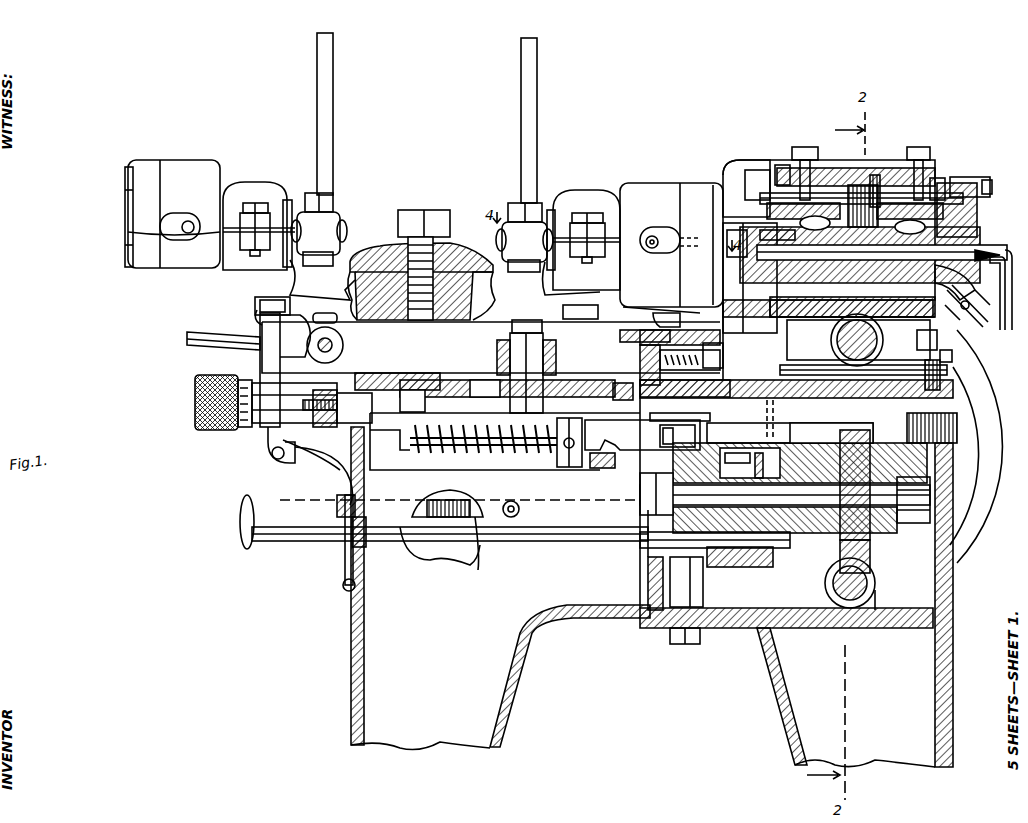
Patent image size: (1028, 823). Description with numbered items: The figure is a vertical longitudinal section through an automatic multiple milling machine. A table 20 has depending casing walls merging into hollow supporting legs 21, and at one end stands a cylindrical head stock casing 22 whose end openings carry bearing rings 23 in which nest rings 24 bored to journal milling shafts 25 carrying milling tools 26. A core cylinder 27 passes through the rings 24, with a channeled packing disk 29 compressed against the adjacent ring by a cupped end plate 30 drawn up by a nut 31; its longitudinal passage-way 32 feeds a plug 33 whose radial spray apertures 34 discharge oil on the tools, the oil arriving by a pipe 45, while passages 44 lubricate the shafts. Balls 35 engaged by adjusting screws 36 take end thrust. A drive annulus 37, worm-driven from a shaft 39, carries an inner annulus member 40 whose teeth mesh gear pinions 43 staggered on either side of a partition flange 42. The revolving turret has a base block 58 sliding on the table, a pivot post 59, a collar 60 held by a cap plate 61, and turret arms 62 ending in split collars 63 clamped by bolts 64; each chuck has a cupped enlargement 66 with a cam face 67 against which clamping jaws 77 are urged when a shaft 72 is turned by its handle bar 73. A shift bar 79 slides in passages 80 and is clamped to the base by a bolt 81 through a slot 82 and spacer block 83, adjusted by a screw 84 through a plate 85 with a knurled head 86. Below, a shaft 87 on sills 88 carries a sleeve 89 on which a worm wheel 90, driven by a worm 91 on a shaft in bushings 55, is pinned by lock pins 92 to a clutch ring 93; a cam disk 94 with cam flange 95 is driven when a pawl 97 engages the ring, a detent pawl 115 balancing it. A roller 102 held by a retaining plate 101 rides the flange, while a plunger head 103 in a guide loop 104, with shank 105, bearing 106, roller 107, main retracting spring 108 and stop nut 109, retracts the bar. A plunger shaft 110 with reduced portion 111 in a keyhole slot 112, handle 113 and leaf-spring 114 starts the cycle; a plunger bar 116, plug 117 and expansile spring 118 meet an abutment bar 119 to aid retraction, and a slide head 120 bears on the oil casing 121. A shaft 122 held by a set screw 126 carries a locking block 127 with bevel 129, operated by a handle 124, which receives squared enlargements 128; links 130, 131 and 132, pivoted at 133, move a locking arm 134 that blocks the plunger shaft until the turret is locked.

The table or base plate 20 is at (915, 385).
The hollow supporting legs 21 is at (510, 715).
The head stock casing 22 is at (890, 160).
The bearing rings 23 is at (780, 165).
The rings 24 is at (758, 172).
The milling shaft 25 is at (820, 200).
The milling tools 26 is at (750, 195).
The core cylinder 27 is at (968, 285).
The annular packing disk 29 is at (770, 232).
The cupped end plate 30 is at (970, 178).
The nut 31 is at (1010, 250).
The longitudinal passage-way 32 is at (1006, 280).
The plug 33 is at (700, 242).
The radial spray apertures 34 is at (700, 250).
The balls 35 is at (962, 333).
The adjusting screws 36 is at (990, 190).
The drive annulus 37 is at (878, 175).
The shaft 39 is at (860, 360).
The annulus member 40 is at (880, 185).
The annular partition flange 42 is at (935, 366).
The gear pinions 43 is at (948, 87).
The passages 44 is at (805, 147).
The pipe 45 is at (982, 307).
The bushings 55 is at (975, 520).
The base block 58 is at (491, 347).
The pivot post 59 is at (392, 258).
The collar 60 is at (468, 250).
The cap plate 61 is at (430, 250).
The turret arms 62 is at (445, 280).
The split chuck receiving collars 63 is at (250, 192).
The bolts 64 is at (262, 205).
The cupped enlargement 66 is at (148, 168).
The frusto-conical cam face 67 is at (190, 222).
The shaft 72 is at (342, 210).
The handle bar 73 is at (322, 110).
The clamping jaws 77 is at (125, 215).
The shift bar 79 is at (395, 375).
The passages 80 is at (1000, 402).
The bolt 81 is at (545, 348).
The slot 82 is at (545, 368).
The spacer block 83 is at (480, 382).
The screw 84 is at (376, 400).
The plate 85 is at (266, 448).
The knurled head 86 is at (200, 425).
The shaft 87 is at (872, 555).
The sills 88 is at (700, 510).
The sleeve 89 is at (900, 482).
The worm wheel 90 is at (875, 583).
The worm 91 is at (875, 610).
The radial lock pins 92 is at (790, 545).
The clutch ring 93 is at (775, 562).
The cam disk 94 is at (725, 570).
The cam flange 95 is at (760, 580).
The pawl 97 is at (745, 590).
The retaining plate 101 is at (805, 432).
The roller 102 is at (760, 420).
The plunger head 103 is at (642, 435).
The guide loop 104 is at (615, 468).
The shank 105 is at (475, 452).
The bearing 106 is at (393, 455).
The roller 107 is at (676, 442).
The main retracting spring 108 is at (556, 448).
The stop nut 109 is at (566, 465).
The plunger shaft 110 is at (585, 540).
The reduced intermediate end portion 111 is at (370, 550).
The keyhole slot 112 is at (420, 555).
The handle 113 is at (243, 535).
The leaf-spring 114 is at (343, 560).
The detent and balance pawl 115 is at (720, 415).
The plunger bar 116 is at (739, 355).
The plug 117 is at (722, 370).
The expansile spring 118 is at (665, 345).
The abutment bar 119 is at (950, 360).
The slide head 120 is at (665, 315).
The oil casing 121 is at (750, 278).
The shaft 122 is at (337, 346).
The handle 124 is at (185, 340).
The set screw 126 is at (323, 313).
The locking block 127 is at (260, 324).
The squared enlargements 128 is at (268, 297).
The beveled side 129 is at (255, 312).
The link 130 is at (260, 355).
The angular link 131 is at (340, 472).
The link 132 is at (480, 550).
The pivot 133 is at (520, 508).
The locking arm 134 is at (338, 508).